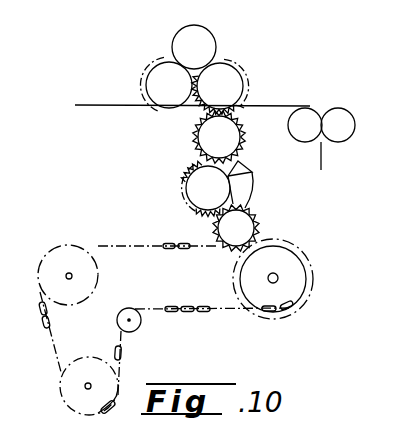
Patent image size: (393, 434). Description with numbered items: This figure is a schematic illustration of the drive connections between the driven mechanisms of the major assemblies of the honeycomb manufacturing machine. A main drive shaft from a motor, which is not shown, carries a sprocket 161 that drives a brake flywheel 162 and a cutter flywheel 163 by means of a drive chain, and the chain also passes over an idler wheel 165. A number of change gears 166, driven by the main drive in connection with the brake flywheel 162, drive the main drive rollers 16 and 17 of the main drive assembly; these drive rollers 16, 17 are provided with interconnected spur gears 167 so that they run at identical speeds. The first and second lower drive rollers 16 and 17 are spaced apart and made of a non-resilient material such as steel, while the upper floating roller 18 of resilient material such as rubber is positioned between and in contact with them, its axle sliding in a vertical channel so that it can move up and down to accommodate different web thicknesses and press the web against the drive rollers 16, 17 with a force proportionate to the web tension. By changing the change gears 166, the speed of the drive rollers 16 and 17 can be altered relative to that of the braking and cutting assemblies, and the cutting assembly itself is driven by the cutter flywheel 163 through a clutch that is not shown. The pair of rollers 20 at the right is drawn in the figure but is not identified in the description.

The first lower drive roller 16 is at (151, 73).
The second lower drive roller 17 is at (233, 78).
The upper floating roller 18 is at (202, 32).
The roller pair 20 is at (348, 120).
The sprocket 161 is at (67, 400).
The brake flywheel 162 is at (295, 268).
The cutter flywheel 163 is at (94, 228).
The idler wheel 165 is at (249, 170).
The change gears 166 is at (195, 110).
The spur gear 167 is at (241, 108).